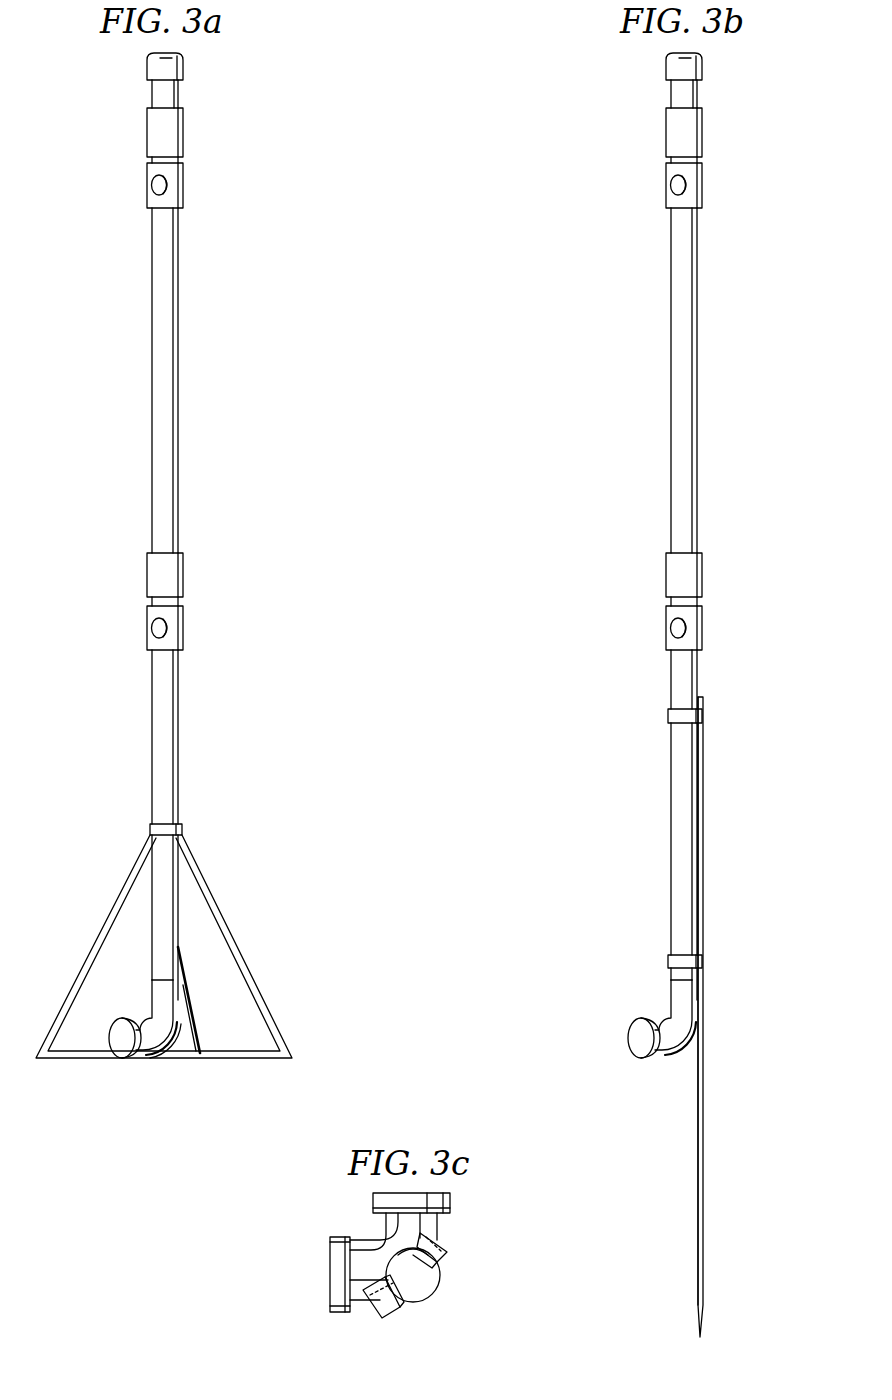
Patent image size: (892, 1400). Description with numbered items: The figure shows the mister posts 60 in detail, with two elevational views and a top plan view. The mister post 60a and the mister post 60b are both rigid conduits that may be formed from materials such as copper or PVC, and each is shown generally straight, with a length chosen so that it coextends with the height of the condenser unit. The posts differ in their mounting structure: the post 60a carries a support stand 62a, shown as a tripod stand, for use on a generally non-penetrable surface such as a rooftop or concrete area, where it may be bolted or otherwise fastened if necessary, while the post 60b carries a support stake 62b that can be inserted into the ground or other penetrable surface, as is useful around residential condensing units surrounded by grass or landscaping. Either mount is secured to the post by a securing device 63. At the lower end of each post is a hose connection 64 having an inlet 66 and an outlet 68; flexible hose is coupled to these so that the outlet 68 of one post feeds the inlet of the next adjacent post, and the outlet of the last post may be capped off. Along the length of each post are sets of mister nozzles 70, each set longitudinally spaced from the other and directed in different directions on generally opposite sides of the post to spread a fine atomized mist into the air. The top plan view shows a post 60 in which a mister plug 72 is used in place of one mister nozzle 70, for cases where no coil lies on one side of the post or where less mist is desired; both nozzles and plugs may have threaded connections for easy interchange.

In FIG. 3a, the mister post 60a is at (212, 334).
In FIG. 3b, the mister post 60b is at (737, 334).
In FIG. 3c, the mister post 60 is at (438, 1306).
In FIG. 3a, the support stand 62a is at (96, 946).
In FIG. 3b, the support stake 62b is at (736, 1017).
In FIG. 3a, the securing device 63 is at (150, 828).
In FIG. 3b, the securing device 63 is at (715, 724).
In FIG. 3a, the hose connection 64 is at (157, 1066).
In FIG. 3b, the hose connection 64 is at (634, 1056).
In FIG. 3a, the inlet 66 is at (187, 1058).
In FIG. 3b, the inlet 66 is at (680, 1067).
In FIG. 3c, the inlet 66 is at (452, 1203).
In FIG. 3a, the outlet 68 is at (125, 1062).
In FIG. 3b, the outlet 68 is at (616, 1038).
In FIG. 3a, the mister nozzle 70 is at (147, 578).
In FIG. 3b, the mister nozzle 70 is at (654, 606).
In FIG. 3c, the mister nozzle 70 is at (447, 1250).
In FIG. 3c, the mister plug 72 is at (380, 1321).